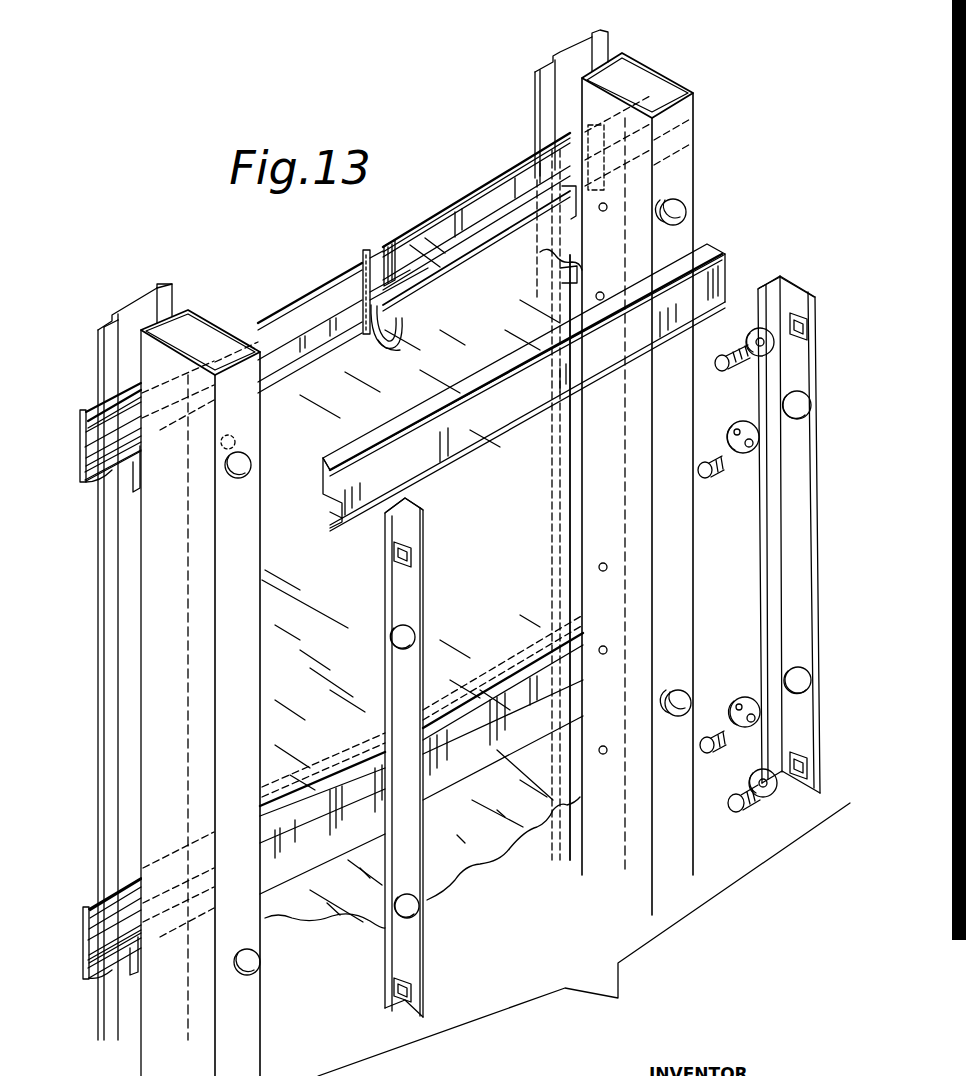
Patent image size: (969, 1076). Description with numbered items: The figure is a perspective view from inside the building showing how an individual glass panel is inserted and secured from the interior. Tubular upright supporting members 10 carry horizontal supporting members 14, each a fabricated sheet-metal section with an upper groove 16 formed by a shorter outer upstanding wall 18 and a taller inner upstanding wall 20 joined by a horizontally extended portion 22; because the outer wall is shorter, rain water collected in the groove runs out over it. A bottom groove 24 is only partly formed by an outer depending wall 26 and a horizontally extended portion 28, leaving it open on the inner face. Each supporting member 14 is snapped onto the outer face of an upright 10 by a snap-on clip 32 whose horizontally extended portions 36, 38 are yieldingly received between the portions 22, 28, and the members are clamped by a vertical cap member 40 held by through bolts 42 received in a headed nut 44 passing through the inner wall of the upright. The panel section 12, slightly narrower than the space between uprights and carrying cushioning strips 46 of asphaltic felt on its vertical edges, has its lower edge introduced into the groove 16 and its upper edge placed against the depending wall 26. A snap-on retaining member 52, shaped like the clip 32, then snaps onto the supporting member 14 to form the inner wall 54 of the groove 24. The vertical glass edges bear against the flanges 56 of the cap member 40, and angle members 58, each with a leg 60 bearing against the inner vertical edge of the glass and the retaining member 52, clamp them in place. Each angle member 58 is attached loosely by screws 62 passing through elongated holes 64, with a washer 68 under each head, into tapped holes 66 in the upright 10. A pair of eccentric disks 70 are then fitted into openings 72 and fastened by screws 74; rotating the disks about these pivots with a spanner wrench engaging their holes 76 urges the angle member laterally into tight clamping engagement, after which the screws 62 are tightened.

The upright fixed supporting member 10 is at (688, 180).
The panel section 12 is at (312, 618).
The horizontal supporting member 14 is at (302, 290).
The upper groove 16 is at (376, 258).
The outer upstanding wall 18 is at (362, 256).
The inner upstanding wall 20 is at (396, 242).
The horizontally extended portion 22 is at (420, 282).
The bottom groove 24 is at (400, 312).
The outer depending wall 26 is at (392, 334).
The horizontally extended portion 28 is at (424, 297).
The snap-on clip 32 is at (135, 485).
The horizontally extended portion 36 is at (542, 147).
The horizontally extended portion 38 is at (520, 164).
The cap member 40 is at (568, 52).
The through bolt 42 is at (230, 438).
The headed nut 44 is at (252, 462).
The cushioning strip 46 is at (578, 272).
The snap-on retaining member 52 is at (476, 440).
The inner wall 54 is at (332, 536).
The flange 56 is at (175, 302).
The angle member 58 is at (422, 585).
The leg 60 is at (412, 513).
The screw 62 is at (745, 358).
The elongated hole 64 is at (808, 323).
The tapped hole 66 is at (608, 210).
The washer 68 is at (756, 355).
The eccentric disk 70 is at (760, 438).
The opening 72 is at (805, 406).
The screw 74 is at (720, 472).
The hole 76 is at (732, 432).